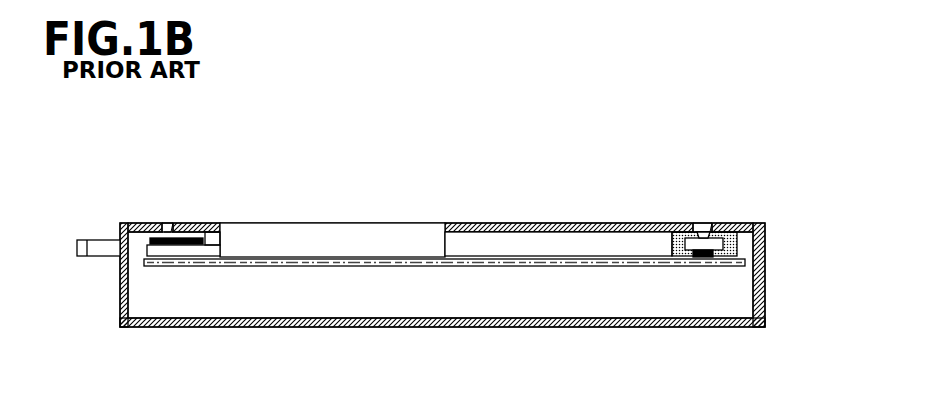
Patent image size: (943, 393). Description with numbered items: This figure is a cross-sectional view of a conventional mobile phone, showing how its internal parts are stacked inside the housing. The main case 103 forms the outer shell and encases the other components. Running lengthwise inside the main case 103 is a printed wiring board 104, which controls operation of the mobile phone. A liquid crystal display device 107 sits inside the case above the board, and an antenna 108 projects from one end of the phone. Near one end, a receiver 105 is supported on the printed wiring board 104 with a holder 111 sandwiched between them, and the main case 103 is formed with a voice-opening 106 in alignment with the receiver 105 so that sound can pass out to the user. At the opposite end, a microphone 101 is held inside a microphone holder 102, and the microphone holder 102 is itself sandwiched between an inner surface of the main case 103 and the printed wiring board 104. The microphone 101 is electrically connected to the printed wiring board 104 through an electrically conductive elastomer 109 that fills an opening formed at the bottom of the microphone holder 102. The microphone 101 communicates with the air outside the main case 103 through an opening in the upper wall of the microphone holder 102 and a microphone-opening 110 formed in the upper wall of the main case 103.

The microphone 101 is at (683, 257).
The microphone holder 102 is at (740, 240).
The main case 103 is at (548, 223).
The printed wiring board 104 is at (492, 266).
The receiver 105 is at (175, 252).
The voice-opening 106 is at (167, 223).
The liquid crystal display device 107 is at (333, 223).
The antenna 108 is at (100, 257).
The electrically conductive elastomer 109 is at (707, 257).
The microphone-opening 110 is at (707, 223).
The holder 111 is at (208, 223).